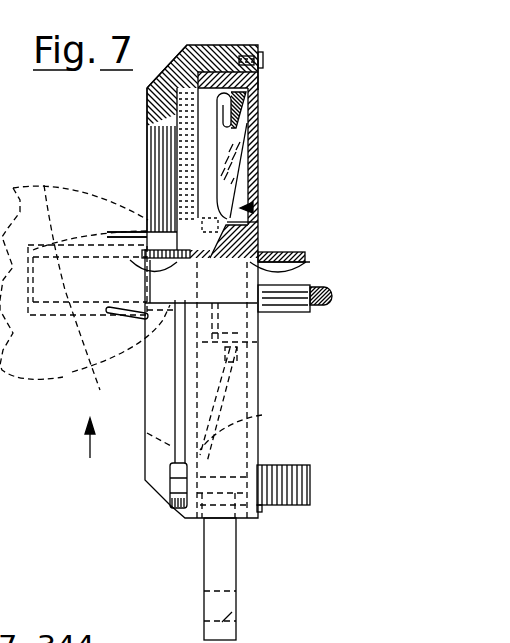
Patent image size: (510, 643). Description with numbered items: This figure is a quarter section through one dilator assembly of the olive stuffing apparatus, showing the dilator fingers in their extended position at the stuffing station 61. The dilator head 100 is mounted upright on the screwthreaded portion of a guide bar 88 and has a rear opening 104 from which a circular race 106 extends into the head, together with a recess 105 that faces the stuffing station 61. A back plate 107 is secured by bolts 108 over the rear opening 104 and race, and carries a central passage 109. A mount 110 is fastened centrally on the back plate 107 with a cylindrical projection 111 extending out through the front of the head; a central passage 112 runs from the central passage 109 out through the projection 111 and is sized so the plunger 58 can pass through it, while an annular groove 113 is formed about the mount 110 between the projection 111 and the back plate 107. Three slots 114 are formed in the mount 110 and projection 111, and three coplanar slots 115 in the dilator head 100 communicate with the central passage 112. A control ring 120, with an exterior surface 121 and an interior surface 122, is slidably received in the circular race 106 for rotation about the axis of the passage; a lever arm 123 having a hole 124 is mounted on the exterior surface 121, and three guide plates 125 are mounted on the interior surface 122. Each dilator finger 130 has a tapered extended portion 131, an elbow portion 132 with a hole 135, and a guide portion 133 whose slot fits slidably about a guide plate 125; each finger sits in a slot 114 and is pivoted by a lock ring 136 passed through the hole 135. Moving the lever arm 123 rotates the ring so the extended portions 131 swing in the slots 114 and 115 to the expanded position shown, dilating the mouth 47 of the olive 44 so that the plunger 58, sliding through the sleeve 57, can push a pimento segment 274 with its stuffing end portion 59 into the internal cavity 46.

The olive 44 is at (63, 392).
The internal cavity 46 is at (44, 185).
The mouth 47 is at (146, 372).
The sleeve 57 is at (274, 312).
The plunger 58 is at (313, 304).
The stuffing end portion 59 is at (132, 287).
The stuffing station 61 is at (87, 450).
The guide bar 88 is at (283, 498).
The dilator head 100 is at (237, 45).
The rear opening 104 is at (253, 172).
The recess 105 is at (148, 220).
The circular race 106 is at (259, 77).
The back plate 107 is at (255, 122).
The bolt 108 is at (260, 53).
The central passage 109 is at (328, 284).
The mount 110 is at (252, 246).
The cylindrical projection 111 is at (138, 253).
The central passage 112 is at (142, 272).
The annular groove 113 is at (258, 347).
The slot 114 is at (144, 228).
The slot 115 is at (158, 140).
The control ring 120 is at (197, 46).
The exterior surface 121 is at (233, 45).
The interior surface 122 is at (205, 92).
The lever arm 123 is at (237, 573).
The hole 124 is at (237, 610).
The guide plate 125 is at (248, 104).
The dilator finger 130 is at (252, 207).
The tapered extended portion 131 is at (118, 233).
The elbow portion 132 is at (257, 211).
The guide portion 133 is at (230, 136).
The hole 135 is at (256, 228).
The lock ring 136 is at (213, 222).
The pimento segment 274 is at (89, 401).